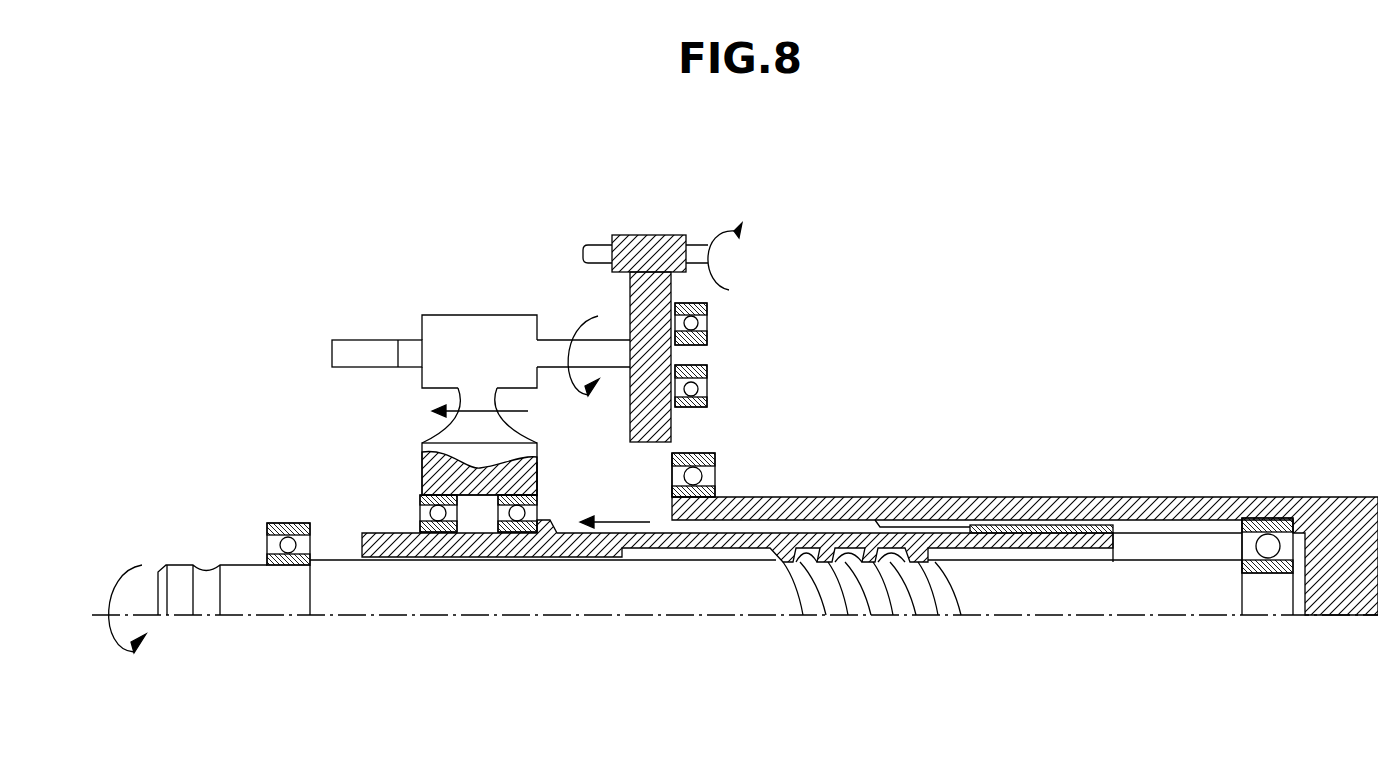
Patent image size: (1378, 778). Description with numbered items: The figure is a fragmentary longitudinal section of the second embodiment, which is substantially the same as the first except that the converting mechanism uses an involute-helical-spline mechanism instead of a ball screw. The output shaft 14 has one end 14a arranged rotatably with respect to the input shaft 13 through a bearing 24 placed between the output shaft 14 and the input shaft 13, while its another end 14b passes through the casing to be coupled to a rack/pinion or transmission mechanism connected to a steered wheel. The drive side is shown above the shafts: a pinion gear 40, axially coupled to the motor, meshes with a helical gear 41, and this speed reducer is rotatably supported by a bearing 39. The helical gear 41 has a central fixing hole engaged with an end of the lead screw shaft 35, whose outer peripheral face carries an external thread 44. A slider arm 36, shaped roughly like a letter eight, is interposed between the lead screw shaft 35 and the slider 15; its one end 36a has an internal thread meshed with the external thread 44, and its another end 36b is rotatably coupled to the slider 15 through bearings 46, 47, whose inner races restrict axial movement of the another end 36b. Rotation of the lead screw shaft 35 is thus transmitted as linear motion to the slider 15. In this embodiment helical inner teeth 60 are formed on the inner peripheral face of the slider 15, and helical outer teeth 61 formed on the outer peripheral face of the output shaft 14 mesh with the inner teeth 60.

The input shaft 13 is at (1013, 500).
The output shaft 14 is at (517, 593).
The one end of output shaft 14a is at (1212, 598).
The another end of output shaft 14b is at (275, 595).
The slider 15 is at (750, 540).
The bearing 24 is at (1268, 540).
The lead screw shaft 35 is at (348, 340).
The slider arm 36 is at (423, 472).
The one end of slider arm 36a is at (480, 328).
The another end of slider arm 36b is at (530, 478).
The bearing 39 is at (707, 310).
The pinion gear 40 is at (650, 243).
The helical gear 41 is at (662, 422).
The external thread 44 is at (404, 340).
The bearing 46 is at (437, 512).
The bearing 47 is at (542, 498).
The helical inner teeth 60 is at (868, 560).
The helical outer teeth 61 is at (870, 592).